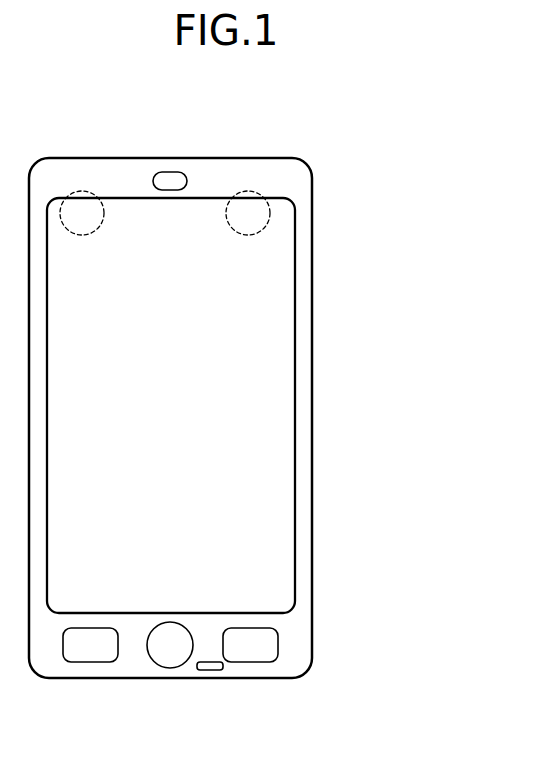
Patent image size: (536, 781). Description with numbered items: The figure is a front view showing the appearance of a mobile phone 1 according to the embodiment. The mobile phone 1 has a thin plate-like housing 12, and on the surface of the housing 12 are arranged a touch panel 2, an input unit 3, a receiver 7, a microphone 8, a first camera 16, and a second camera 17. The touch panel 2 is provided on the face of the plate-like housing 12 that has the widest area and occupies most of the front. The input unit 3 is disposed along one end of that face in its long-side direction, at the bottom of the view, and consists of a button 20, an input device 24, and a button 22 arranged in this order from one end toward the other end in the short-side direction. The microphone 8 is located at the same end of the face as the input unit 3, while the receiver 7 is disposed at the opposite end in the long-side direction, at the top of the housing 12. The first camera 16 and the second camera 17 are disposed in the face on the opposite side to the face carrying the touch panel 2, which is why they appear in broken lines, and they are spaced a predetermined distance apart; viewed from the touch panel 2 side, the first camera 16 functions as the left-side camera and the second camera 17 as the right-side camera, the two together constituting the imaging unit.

The mobile phone 1 is at (366, 216).
The touch panel 2 is at (295, 408).
The input unit 3 is at (170, 699).
The receiver 7 is at (170, 172).
The microphone 8 is at (212, 661).
The housing 12 is at (313, 343).
The first camera 16 is at (80, 191).
The second camera 17 is at (248, 192).
The button 20 is at (92, 662).
The button 22 is at (250, 677).
The input device 24 is at (170, 668).